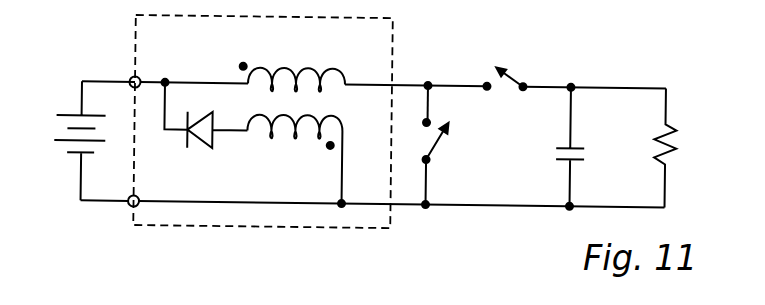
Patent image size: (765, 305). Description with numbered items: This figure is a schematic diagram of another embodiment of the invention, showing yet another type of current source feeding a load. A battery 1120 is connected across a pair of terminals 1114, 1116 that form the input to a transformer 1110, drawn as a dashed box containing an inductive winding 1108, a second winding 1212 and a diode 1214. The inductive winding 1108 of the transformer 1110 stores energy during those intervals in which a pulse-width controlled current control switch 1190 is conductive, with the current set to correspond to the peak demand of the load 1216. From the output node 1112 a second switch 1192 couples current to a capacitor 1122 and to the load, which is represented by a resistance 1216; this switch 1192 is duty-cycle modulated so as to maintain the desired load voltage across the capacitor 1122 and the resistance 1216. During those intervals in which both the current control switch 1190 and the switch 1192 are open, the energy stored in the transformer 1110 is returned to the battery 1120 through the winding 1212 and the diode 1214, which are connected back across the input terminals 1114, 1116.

The inductive winding 1108 is at (276, 70).
The transformer 1110 is at (382, 120).
The output terminal 1112 is at (432, 80).
The input terminal 1114 is at (128, 80).
The input terminal 1116 is at (128, 205).
The battery 1120 is at (58, 132).
The capacitor 1122 is at (583, 157).
The current control switch 1190 is at (436, 150).
The switch 1192 is at (508, 72).
The winding 1212 is at (295, 133).
The diode 1214 is at (215, 145).
The load 1216 is at (678, 162).